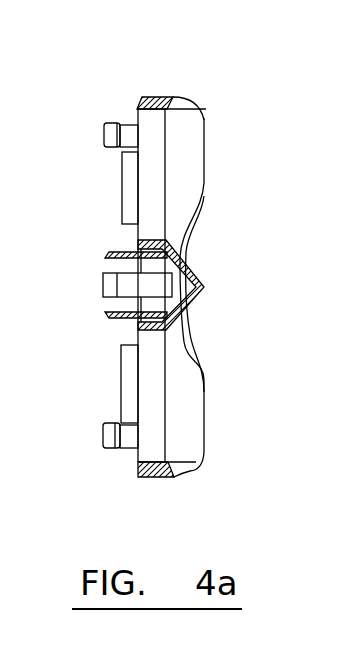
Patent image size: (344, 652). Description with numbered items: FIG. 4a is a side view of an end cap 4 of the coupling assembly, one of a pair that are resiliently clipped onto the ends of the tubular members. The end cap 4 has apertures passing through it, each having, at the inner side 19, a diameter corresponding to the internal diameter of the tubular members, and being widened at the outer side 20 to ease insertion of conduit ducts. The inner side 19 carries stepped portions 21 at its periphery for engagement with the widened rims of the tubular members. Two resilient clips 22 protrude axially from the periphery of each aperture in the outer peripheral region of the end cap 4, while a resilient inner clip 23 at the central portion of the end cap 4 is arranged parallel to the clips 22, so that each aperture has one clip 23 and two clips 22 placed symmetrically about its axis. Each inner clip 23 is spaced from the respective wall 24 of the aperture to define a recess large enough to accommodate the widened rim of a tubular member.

The end cap 4 is at (150, 450).
The inner side 19 is at (137, 245).
The outer side 20 is at (176, 105).
The stepped portion 21 is at (141, 97).
The resilient clip 22 is at (110, 138).
The resilient inner clip 23 is at (106, 254).
The wall 24 is at (173, 229).